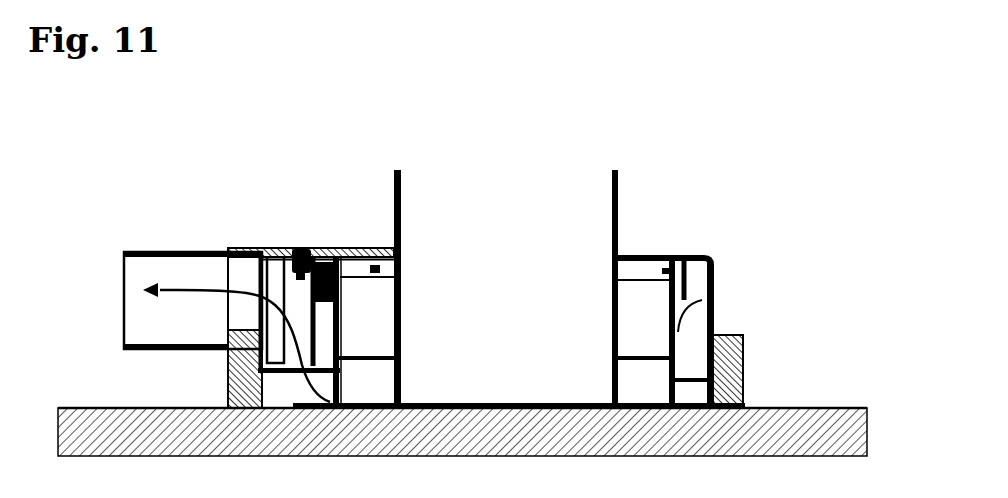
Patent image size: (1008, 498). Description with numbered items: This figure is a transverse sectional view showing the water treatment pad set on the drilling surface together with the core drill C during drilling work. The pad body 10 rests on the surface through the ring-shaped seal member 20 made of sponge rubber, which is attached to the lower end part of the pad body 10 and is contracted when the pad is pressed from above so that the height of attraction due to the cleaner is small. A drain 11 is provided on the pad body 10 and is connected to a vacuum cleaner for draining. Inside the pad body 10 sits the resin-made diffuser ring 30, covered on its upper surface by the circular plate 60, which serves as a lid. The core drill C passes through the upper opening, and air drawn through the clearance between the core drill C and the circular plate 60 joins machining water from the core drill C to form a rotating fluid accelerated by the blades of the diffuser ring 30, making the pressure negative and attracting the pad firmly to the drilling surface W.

The pad body 10 is at (708, 256).
The drain 11 is at (188, 251).
The seal member 20 is at (743, 393).
The diffuser ring 30 is at (711, 300).
The circular plate 60 is at (356, 250).
The core drill C is at (595, 210).
The floor W is at (128, 433).